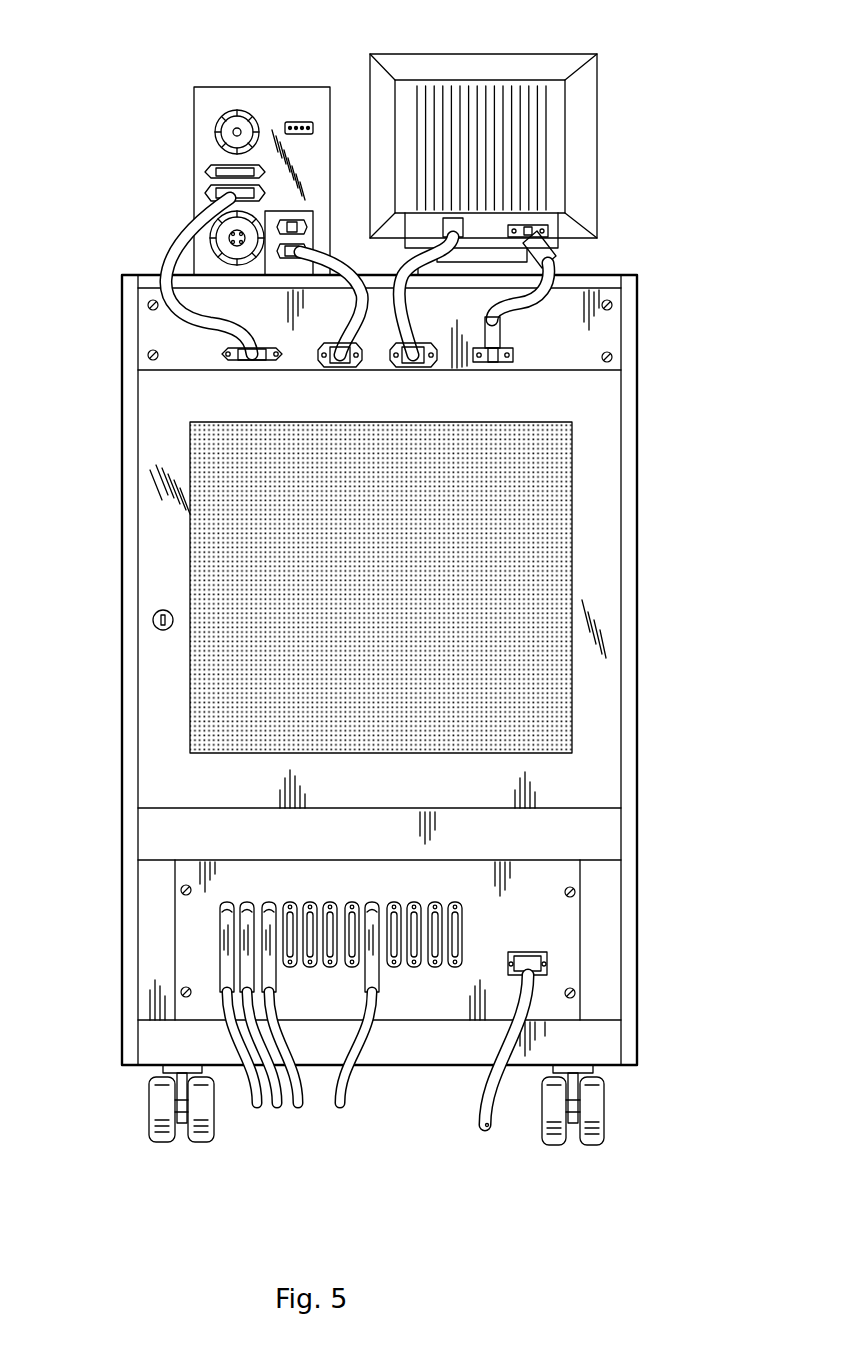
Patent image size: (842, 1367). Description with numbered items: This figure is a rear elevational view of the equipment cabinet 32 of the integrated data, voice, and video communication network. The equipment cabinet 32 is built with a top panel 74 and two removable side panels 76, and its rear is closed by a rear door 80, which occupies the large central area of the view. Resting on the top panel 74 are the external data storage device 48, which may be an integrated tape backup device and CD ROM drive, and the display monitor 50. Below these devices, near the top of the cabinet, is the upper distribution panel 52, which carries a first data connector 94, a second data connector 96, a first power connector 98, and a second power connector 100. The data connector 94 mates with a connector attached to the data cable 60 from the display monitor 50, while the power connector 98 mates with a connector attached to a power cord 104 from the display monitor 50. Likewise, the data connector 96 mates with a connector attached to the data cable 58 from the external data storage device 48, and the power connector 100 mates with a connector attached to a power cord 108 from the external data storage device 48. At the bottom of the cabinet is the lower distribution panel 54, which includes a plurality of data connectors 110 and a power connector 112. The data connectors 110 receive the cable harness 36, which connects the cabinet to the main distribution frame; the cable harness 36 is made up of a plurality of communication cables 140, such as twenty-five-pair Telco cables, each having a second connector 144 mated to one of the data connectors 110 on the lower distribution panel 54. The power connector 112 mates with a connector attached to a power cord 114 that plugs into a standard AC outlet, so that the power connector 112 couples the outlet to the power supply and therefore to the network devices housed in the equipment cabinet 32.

The equipment cabinet 32 is at (660, 572).
The cable harness 36 is at (237, 1056).
The external data storage device 48 is at (258, 87).
The display monitor 50 is at (497, 54).
The upper distribution panel 52 is at (605, 325).
The lower distribution panel 54 is at (560, 925).
The data cable 58 is at (172, 262).
The data cable 60 is at (560, 267).
The top panel 74 is at (607, 283).
The removable side panels 76 is at (126, 666).
The rear door 80 is at (158, 568).
The first data connector 94 is at (513, 352).
The second data connector 96 is at (222, 352).
The first power connector 98 is at (437, 368).
The second power connector 100 is at (318, 368).
The power cord 104 is at (392, 355).
The power cord 108 is at (362, 355).
The data connectors 110 is at (463, 920).
The power connector 112 is at (548, 957).
The power cord 114 is at (490, 1130).
The communication cables 140 is at (343, 1100).
The second connector 144 is at (228, 920).